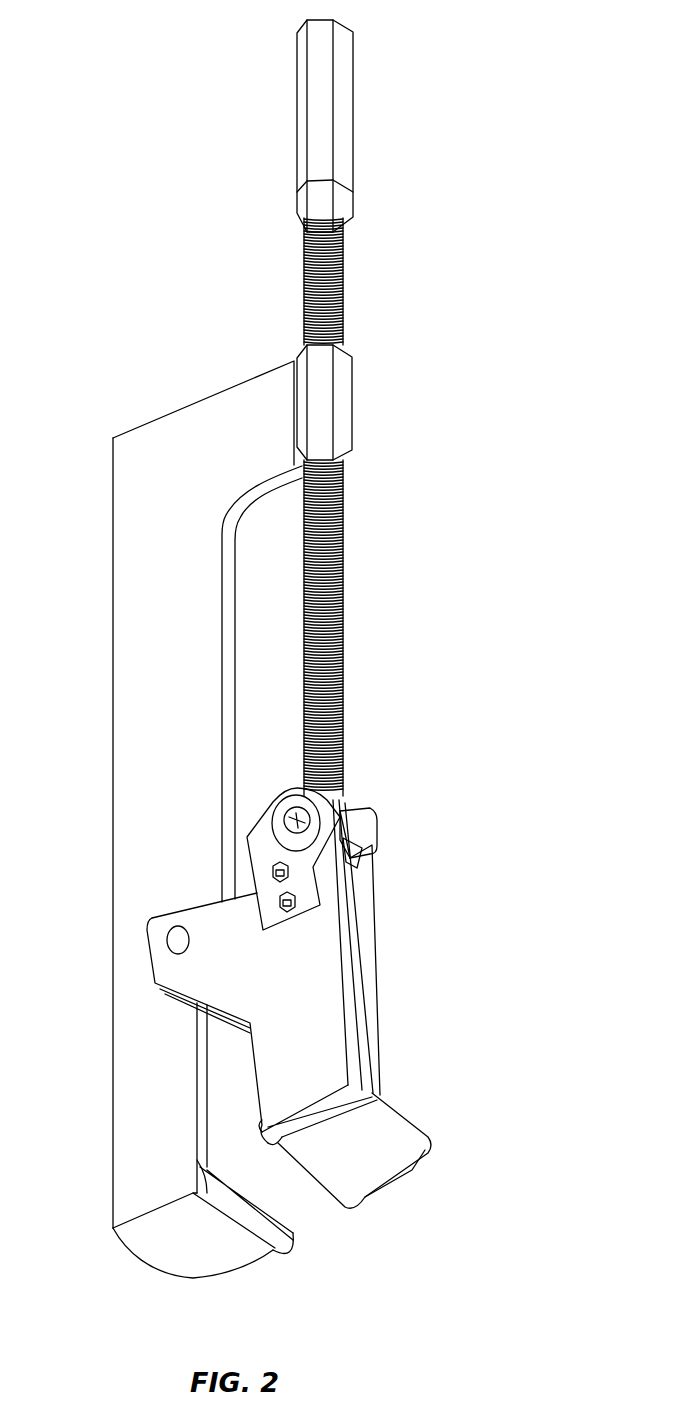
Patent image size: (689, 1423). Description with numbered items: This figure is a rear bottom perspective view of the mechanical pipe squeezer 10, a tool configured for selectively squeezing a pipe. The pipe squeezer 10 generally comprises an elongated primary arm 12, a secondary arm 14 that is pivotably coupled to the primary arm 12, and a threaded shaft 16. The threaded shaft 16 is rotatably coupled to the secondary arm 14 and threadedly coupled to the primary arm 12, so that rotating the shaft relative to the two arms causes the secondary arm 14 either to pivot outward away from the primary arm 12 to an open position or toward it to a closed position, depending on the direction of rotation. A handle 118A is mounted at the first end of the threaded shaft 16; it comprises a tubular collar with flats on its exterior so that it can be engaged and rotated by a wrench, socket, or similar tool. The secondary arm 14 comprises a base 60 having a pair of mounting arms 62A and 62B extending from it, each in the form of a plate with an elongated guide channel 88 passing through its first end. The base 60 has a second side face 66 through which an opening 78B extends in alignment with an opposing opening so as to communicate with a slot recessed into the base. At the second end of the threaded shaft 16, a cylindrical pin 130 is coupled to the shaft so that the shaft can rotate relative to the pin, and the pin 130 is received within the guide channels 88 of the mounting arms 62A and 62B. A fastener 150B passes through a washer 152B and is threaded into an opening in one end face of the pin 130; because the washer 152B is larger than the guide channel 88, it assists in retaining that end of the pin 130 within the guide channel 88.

The mechanical pipe squeezer 10 is at (535, 71).
The handle 118A is at (343, 102).
The threaded shaft 16 is at (343, 599).
The primary arm 12 is at (138, 777).
The mounting arm 62B is at (262, 830).
The opening 78B is at (166, 947).
The washer 152B is at (318, 792).
The fastener 150B is at (305, 814).
The cylindrical pin 130 is at (345, 838).
The guide channel 88 is at (357, 845).
The mounting arm 62A is at (362, 863).
The second side face 66 is at (310, 983).
The secondary arm 14 is at (330, 1022).
The base 60 is at (327, 1062).